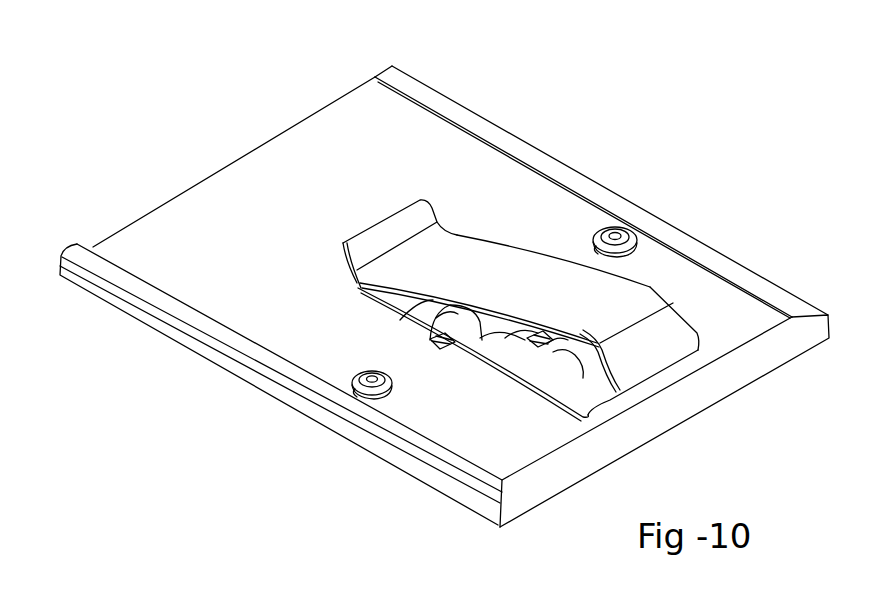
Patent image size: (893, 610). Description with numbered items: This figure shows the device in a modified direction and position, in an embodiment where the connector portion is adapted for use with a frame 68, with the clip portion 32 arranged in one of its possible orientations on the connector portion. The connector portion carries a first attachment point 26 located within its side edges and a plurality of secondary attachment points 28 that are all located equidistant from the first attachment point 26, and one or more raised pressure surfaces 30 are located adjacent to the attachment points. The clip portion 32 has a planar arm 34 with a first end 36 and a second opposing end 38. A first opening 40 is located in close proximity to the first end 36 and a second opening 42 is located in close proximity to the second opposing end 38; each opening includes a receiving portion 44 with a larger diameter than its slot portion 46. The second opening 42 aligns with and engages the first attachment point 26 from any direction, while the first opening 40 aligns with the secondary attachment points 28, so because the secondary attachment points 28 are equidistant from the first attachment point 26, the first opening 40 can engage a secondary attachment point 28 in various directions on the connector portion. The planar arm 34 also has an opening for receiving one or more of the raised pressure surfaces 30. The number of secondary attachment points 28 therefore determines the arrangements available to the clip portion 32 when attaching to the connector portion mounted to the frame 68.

The first attachment point 26 is at (462, 345).
The secondary attachment points 28 is at (615, 231).
The raised pressure surfaces 30 is at (445, 336).
The clip portion 32 is at (650, 293).
The planar arm 34 is at (553, 360).
The first end 36 is at (588, 420).
The second opposing end 38 is at (355, 287).
The first opening 40 is at (580, 380).
The second opening 42 is at (440, 312).
The receiving portion 44 is at (425, 300).
The slot portion 46 is at (437, 348).
The frame 68 is at (737, 303).